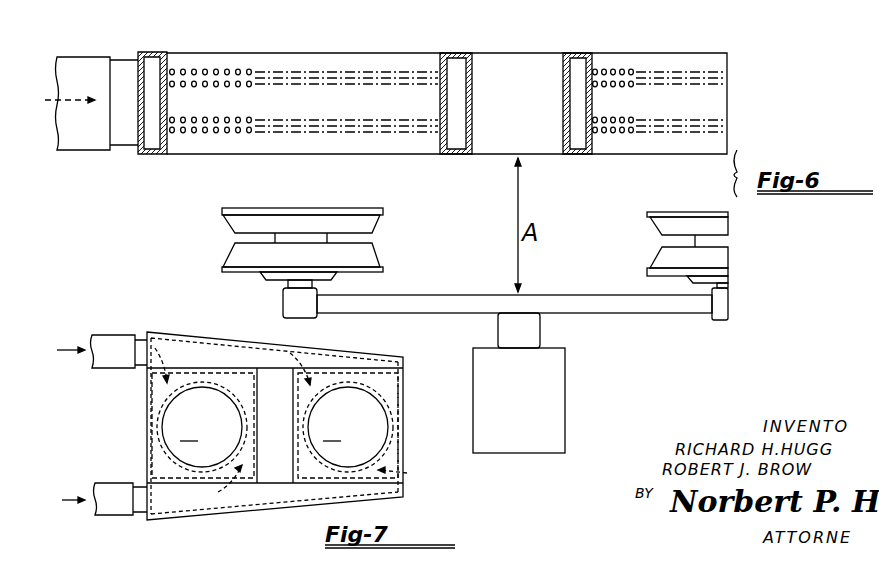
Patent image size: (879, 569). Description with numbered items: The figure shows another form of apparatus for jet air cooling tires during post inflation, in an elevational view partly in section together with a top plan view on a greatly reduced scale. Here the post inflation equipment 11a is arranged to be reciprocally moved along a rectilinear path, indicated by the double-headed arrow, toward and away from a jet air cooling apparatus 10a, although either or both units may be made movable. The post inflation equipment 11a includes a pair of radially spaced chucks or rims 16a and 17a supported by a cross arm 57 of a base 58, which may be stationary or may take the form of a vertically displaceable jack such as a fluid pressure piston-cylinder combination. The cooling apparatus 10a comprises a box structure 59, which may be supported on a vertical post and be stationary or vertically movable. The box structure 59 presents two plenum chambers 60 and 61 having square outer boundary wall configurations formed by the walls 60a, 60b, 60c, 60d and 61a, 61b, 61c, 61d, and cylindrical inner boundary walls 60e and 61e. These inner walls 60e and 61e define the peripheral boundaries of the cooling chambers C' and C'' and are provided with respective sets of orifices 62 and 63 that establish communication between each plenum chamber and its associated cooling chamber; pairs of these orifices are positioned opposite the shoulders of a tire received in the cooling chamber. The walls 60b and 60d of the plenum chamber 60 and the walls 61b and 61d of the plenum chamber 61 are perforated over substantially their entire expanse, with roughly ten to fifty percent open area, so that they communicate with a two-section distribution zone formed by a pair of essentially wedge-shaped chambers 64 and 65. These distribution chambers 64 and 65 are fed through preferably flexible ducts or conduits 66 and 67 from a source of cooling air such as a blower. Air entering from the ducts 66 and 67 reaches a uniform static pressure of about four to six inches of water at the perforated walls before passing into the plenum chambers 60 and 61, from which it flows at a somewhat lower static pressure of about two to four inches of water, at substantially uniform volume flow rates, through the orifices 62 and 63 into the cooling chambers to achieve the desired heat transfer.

In FIG. 6, the jet air cooling apparatus 10a is at (743, 103).
In FIG. 6, the post inflation equipment 11a is at (211, 236).
In FIG. 6, the chuck 16a is at (357, 210).
In FIG. 6, the chuck 17a is at (660, 212).
In FIG. 6, the cross arm 57 is at (608, 304).
In FIG. 6, the base 58 is at (565, 400).
In FIG. 6, the box structure 59 is at (540, 44).
In FIG. 7, the box structure 59 is at (405, 427).
In FIG. 6, the plenum chamber 60 is at (155, 63).
In FIG. 7, the plenum chamber 60 is at (167, 467).
In FIG. 7, the outer boundary wall 60a is at (147, 410).
In FIG. 7, the outer boundary wall 60b is at (177, 483).
In FIG. 7, the outer boundary wall 60c is at (258, 460).
In FIG. 7, the outer boundary wall 60d is at (202, 365).
In FIG. 6, the cylindrical inner boundary wall 60e is at (237, 147).
In FIG. 6, the plenum chamber 61 is at (577, 64).
In FIG. 7, the plenum chamber 61 is at (387, 383).
In FIG. 7, the outer boundary wall 61a is at (288, 463).
In FIG. 7, the outer boundary wall 61b is at (387, 477).
In FIG. 7, the outer boundary wall 61c is at (405, 402).
In FIG. 7, the outer boundary wall 61d is at (360, 365).
In FIG. 6, the cylindrical inner boundary wall 61e is at (687, 65).
In FIG. 6, the orifices 62 is at (217, 73).
In FIG. 6, the orifices 63 is at (613, 88).
In FIG. 7, the wedge-shaped distribution chamber 64 is at (200, 497).
In FIG. 7, the wedge-shaped distribution chamber 65 is at (238, 355).
In FIG. 7, the flexible duct 66 is at (110, 490).
In FIG. 6, the flexible duct 67 is at (95, 65).
In FIG. 7, the flexible duct 67 is at (100, 345).